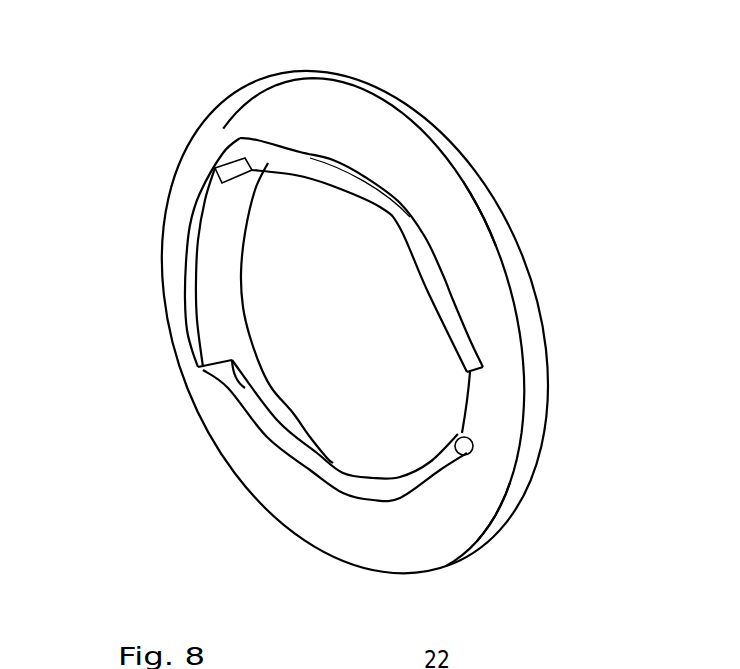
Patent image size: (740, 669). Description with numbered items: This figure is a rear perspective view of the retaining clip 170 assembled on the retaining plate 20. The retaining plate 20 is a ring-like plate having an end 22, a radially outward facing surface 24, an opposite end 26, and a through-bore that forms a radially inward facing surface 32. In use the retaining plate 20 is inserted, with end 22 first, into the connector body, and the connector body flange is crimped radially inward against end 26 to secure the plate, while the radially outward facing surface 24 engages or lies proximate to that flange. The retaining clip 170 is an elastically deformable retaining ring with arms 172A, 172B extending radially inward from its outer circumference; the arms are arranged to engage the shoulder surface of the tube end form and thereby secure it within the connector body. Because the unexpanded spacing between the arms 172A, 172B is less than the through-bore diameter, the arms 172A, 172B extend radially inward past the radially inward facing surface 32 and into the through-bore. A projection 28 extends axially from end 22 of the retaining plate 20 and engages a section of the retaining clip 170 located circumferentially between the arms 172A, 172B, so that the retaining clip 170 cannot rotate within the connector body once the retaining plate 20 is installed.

The retaining plate 20 is at (528, 328).
The end 22 is at (483, 477).
The radially outward facing surface 24 is at (457, 165).
The end 26 is at (510, 227).
The projection 28 is at (200, 283).
The radially inward facing surface 32 is at (258, 380).
The retaining clip 170 is at (222, 158).
The arm 172A is at (262, 425).
The arm 172B is at (297, 165).